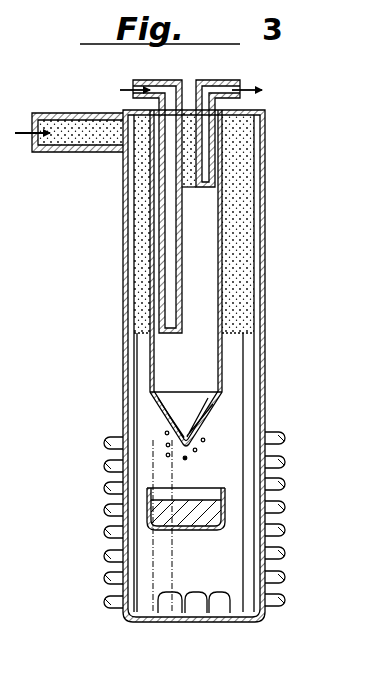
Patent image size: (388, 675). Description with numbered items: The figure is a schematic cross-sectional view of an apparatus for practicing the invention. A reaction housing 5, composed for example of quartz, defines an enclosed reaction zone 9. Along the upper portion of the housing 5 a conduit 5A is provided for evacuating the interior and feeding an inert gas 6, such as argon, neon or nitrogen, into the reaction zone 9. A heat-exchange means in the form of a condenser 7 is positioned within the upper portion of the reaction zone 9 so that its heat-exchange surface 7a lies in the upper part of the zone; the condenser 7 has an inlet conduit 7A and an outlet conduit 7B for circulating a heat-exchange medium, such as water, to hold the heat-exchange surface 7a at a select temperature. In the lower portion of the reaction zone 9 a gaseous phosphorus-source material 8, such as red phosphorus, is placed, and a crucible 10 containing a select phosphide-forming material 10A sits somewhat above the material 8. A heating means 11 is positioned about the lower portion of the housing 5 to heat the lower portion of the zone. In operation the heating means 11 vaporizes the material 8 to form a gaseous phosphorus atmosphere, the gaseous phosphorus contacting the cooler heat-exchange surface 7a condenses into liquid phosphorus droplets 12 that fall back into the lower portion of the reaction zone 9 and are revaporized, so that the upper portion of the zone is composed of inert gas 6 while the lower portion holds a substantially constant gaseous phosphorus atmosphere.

The reaction housing 5 is at (250, 327).
The conduit 5A is at (76, 153).
The inert gas 6 is at (233, 250).
The condenser 7 is at (215, 248).
The inlet conduit 7A is at (133, 86).
The outlet conduit 7B is at (240, 86).
The heat-exchange surface 7a is at (226, 380).
The gaseous phosphorus-source material 8 is at (192, 600).
The reaction zone 9 is at (178, 545).
The crucible 10 is at (236, 495).
The phosphide-forming material 10A is at (196, 516).
The heating means 11 is at (286, 577).
The liquid phosphorus droplets 12 is at (165, 440).